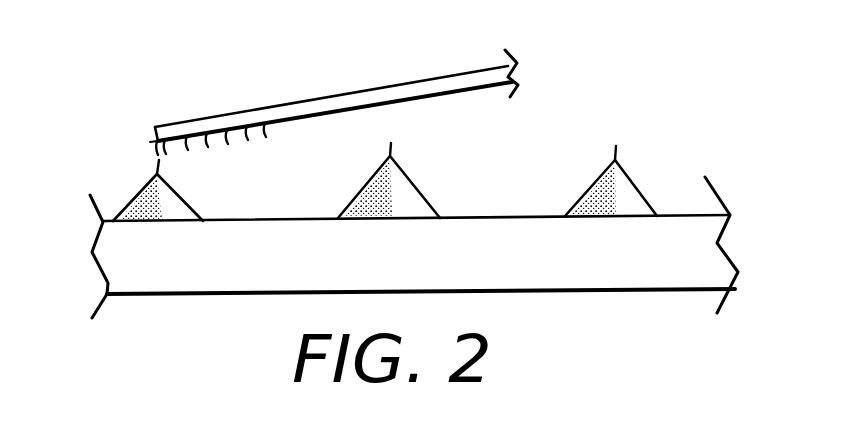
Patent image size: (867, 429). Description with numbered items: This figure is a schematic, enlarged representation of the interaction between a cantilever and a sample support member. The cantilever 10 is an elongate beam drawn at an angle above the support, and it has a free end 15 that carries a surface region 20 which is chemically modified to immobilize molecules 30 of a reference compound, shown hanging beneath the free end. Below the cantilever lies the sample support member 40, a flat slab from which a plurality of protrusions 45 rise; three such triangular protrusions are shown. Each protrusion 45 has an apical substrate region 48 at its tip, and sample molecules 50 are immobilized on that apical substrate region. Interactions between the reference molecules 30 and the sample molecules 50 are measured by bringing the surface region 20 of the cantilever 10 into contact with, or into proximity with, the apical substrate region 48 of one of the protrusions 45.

The cantilever 10 is at (468, 68).
The free end 15 is at (225, 113).
The surface region 20 is at (262, 130).
The molecules of a reference compound 30 is at (157, 142).
The sample support member 40 is at (685, 265).
The protrusions 45 is at (618, 187).
The apical substrate region 48 is at (393, 168).
The sample molecules 50 is at (388, 154).